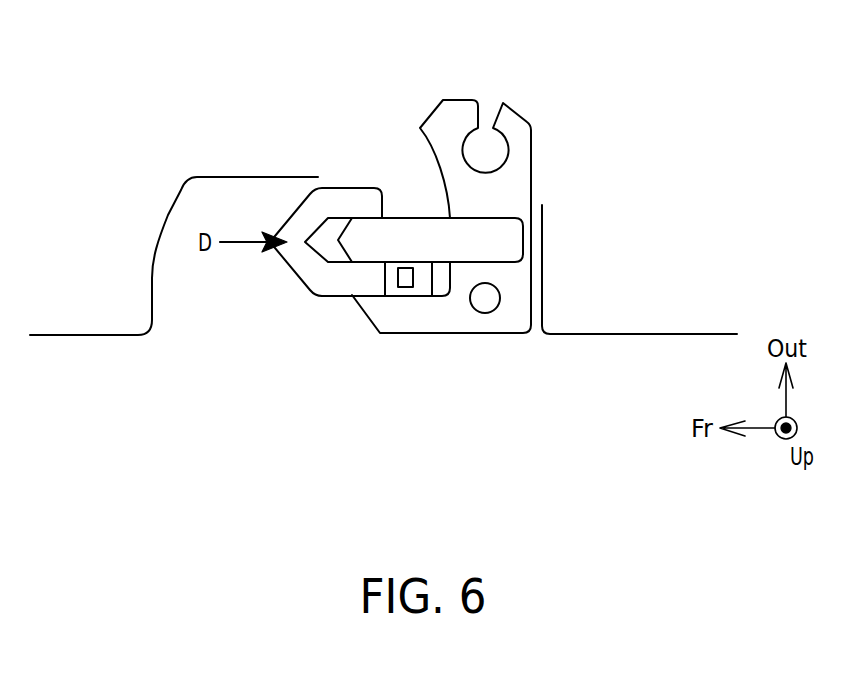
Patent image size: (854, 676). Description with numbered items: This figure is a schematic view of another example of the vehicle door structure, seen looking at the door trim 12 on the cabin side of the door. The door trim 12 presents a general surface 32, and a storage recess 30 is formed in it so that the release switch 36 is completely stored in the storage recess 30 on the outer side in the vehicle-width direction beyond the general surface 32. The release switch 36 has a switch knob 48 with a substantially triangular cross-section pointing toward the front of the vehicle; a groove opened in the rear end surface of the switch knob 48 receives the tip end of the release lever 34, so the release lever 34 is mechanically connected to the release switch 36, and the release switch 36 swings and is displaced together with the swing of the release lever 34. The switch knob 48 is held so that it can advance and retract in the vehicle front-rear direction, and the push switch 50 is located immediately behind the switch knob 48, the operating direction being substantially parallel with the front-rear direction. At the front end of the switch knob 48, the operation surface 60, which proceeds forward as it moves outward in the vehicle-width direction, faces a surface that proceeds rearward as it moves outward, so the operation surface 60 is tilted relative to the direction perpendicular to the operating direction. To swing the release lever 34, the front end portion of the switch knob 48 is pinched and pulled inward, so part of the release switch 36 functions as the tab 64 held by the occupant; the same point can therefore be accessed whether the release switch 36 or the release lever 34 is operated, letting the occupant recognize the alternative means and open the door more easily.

The door trim 12 is at (83, 318).
The storage recess 30 is at (202, 296).
The general surface 32 is at (618, 336).
The release lever 34 is at (413, 227).
The release switch 36 is at (441, 251).
The switch knob 48 is at (342, 283).
The push switch 50 is at (423, 288).
The operation surface 60 is at (293, 272).
The tab 64 is at (297, 205).